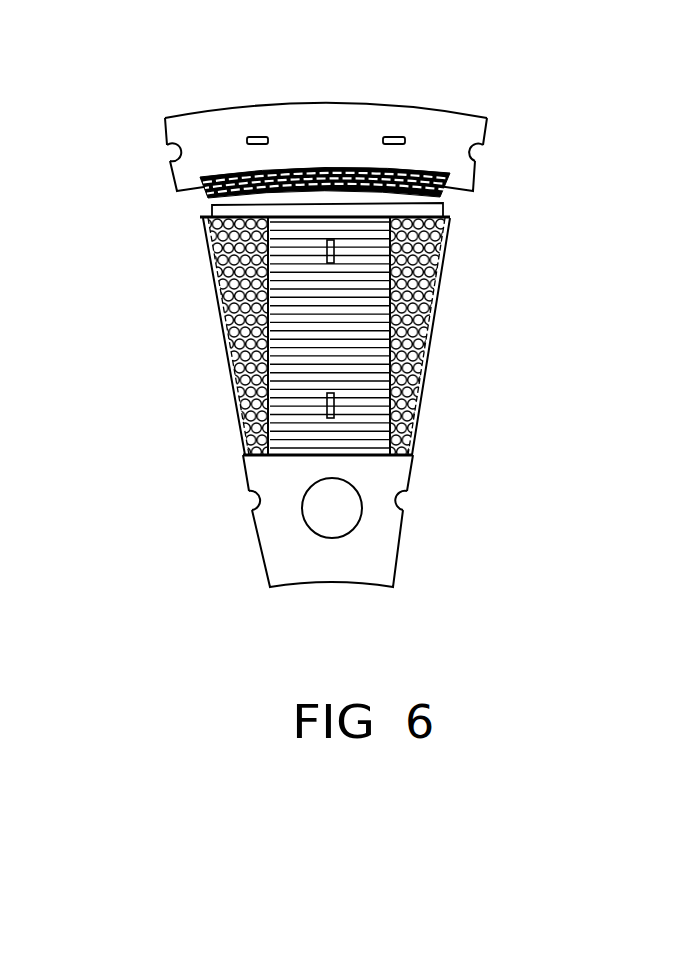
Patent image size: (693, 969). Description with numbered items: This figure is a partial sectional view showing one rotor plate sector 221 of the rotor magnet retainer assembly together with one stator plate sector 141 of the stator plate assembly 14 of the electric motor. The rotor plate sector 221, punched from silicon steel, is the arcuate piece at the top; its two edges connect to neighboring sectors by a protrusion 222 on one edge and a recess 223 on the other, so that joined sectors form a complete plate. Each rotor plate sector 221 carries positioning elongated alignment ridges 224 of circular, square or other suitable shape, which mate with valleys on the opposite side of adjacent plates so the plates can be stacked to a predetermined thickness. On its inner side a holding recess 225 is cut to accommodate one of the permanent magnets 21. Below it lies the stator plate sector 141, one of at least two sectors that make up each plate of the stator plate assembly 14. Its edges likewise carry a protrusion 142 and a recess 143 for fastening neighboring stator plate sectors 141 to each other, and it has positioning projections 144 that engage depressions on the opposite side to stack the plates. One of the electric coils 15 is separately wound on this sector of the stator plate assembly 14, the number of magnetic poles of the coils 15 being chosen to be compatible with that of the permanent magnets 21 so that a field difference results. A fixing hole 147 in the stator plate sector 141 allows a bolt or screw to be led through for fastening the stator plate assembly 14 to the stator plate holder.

The stator plate assembly 14 is at (366, 434).
The stator plate sector 141 is at (277, 567).
The left positioning notch 142 is at (235, 500).
The recess 143 is at (402, 499).
The positioning projection 144 is at (440, 261).
The fixing hole 147 is at (334, 510).
The electric coil 15 is at (235, 325).
The permanent magnet 21 is at (319, 99).
The rotor plate sector 221 is at (320, 112).
The protrusion 222 is at (160, 150).
The recess 223 is at (479, 153).
The positioning elongated alignment ridge 224 is at (255, 136).
The holding recess 225 is at (420, 156).